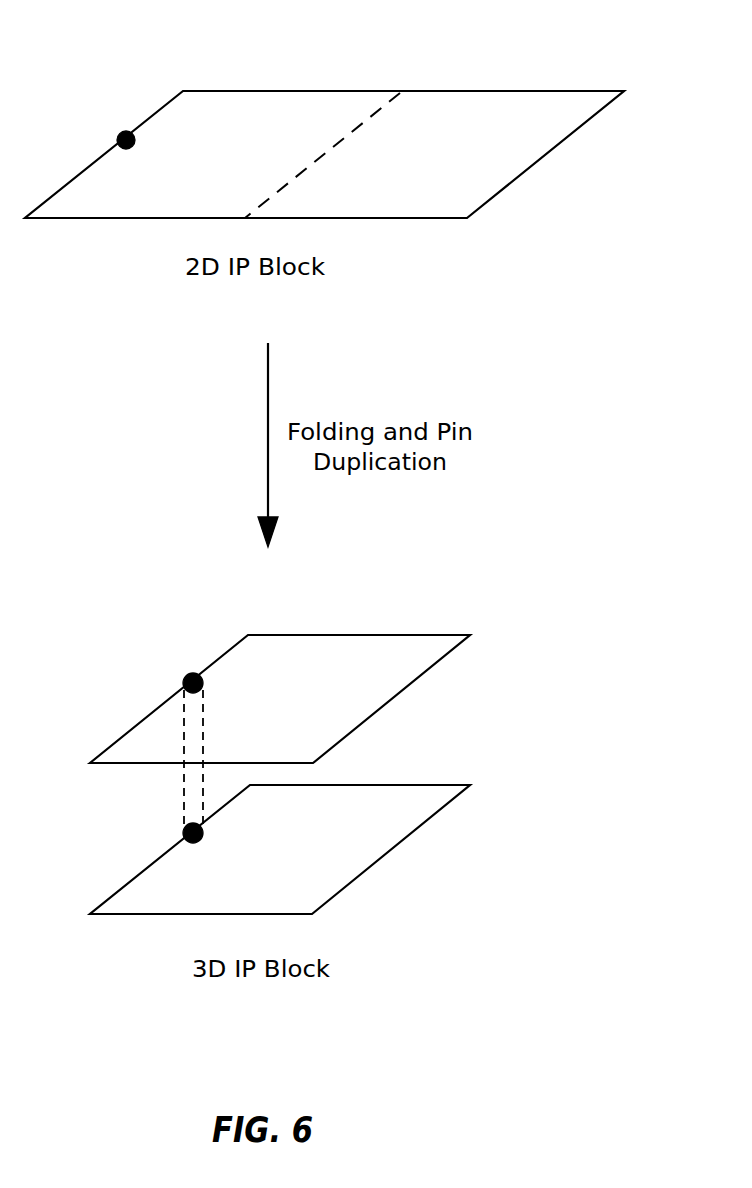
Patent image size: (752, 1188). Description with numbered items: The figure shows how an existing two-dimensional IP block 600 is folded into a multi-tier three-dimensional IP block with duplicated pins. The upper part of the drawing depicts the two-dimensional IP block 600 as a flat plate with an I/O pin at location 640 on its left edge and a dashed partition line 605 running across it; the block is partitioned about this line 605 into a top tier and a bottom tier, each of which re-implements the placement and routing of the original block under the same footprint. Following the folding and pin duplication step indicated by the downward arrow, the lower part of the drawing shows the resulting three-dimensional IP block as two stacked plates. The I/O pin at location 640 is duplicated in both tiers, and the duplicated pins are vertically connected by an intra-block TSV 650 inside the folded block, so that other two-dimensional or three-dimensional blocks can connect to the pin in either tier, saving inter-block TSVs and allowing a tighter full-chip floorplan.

The 2D IP block 600 is at (228, 90).
The I/O pin location 640 is at (125, 131).
The partition line 605 is at (316, 160).
The intra-block TSV 650 is at (204, 726).